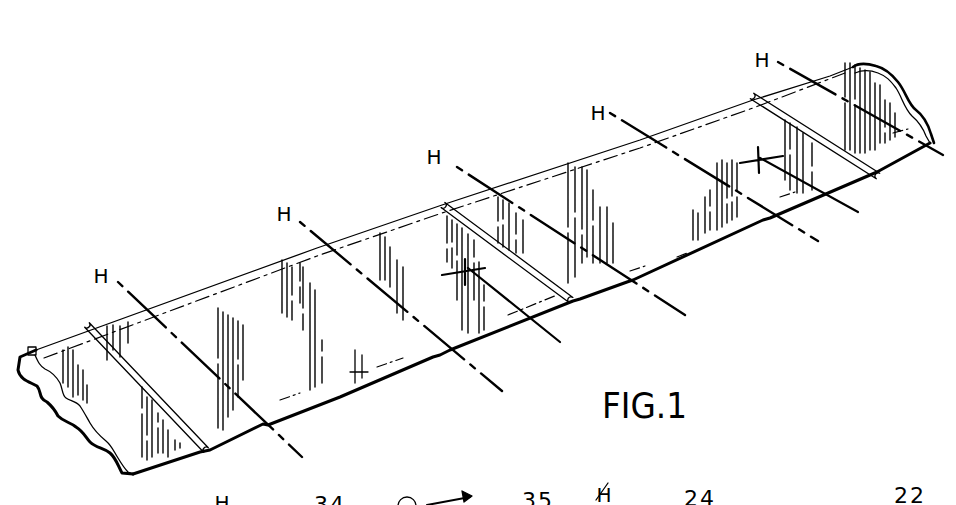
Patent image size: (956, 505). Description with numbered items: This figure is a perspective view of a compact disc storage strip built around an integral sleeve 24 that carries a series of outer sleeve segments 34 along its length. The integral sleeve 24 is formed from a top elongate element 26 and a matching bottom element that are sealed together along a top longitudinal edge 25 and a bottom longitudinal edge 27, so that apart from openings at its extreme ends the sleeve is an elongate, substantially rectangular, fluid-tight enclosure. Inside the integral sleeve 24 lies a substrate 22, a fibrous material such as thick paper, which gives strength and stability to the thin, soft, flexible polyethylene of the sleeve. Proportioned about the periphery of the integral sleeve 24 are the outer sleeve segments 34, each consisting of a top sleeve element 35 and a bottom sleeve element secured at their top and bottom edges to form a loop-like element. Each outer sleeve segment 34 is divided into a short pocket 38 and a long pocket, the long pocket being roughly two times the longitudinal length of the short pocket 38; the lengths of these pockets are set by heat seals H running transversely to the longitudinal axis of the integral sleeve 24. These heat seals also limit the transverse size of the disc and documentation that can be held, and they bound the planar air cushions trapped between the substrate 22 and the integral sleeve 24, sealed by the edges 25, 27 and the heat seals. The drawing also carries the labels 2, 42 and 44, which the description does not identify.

The section view direction arrows 2 is at (663, 257).
The substrate 22 is at (100, 440).
The integral sleeve 24 is at (703, 140).
The top longitudinal edge 25 is at (400, 237).
The top elongate element 26 is at (788, 495).
The bottom longitudinal edge 27 is at (507, 327).
The outer sleeve segments 34 is at (558, 193).
The top sleeve elements 35 is at (240, 309).
The short pocket 38 is at (594, 274).
The strip edge 42 is at (392, 370).
The transverse rib 44 is at (190, 297).